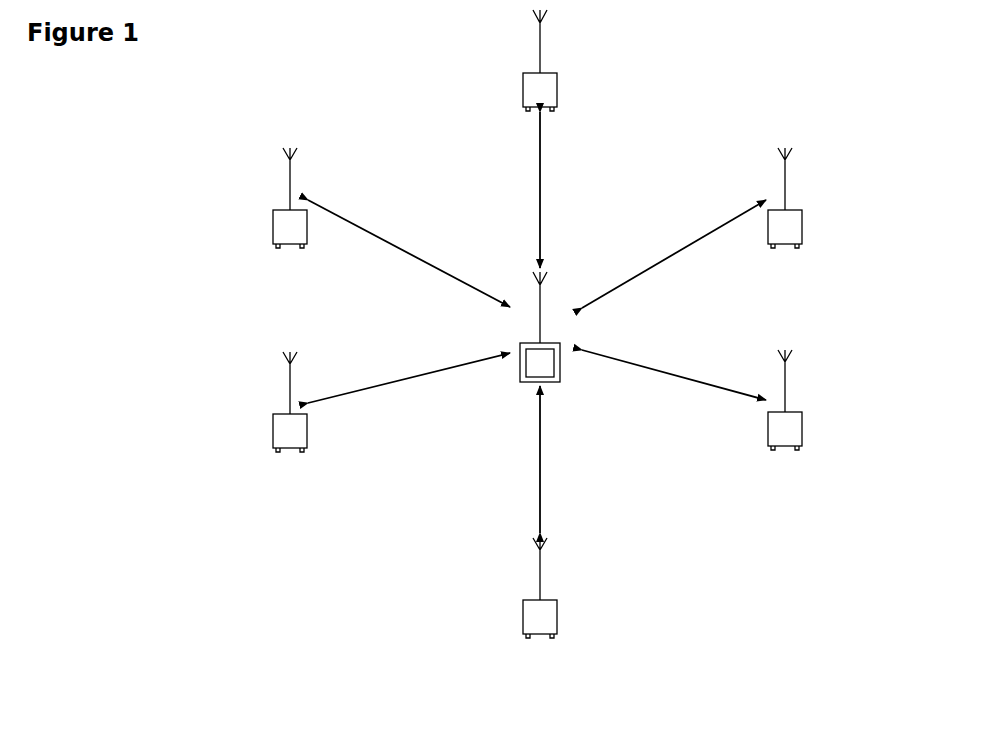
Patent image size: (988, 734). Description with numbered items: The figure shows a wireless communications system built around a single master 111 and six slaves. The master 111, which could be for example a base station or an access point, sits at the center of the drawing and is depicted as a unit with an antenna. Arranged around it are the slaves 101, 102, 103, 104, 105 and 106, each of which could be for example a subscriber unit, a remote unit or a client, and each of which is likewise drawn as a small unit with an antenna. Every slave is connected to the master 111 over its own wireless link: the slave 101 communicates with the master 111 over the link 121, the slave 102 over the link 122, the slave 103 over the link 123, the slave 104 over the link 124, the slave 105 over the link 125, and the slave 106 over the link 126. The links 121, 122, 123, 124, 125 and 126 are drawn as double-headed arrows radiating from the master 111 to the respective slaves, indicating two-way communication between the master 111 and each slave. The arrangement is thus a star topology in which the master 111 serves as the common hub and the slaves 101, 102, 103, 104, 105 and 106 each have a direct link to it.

The slave 101 is at (270, 225).
The slave 102 is at (270, 425).
The slave 103 is at (522, 615).
The slave 104 is at (806, 437).
The slave 105 is at (806, 236).
The slave 106 is at (558, 105).
The master 111 is at (558, 383).
The link 121 is at (384, 236).
The link 122 is at (383, 382).
The link 123 is at (538, 465).
The link 124 is at (697, 375).
The link 125 is at (703, 238).
The link 126 is at (550, 218).